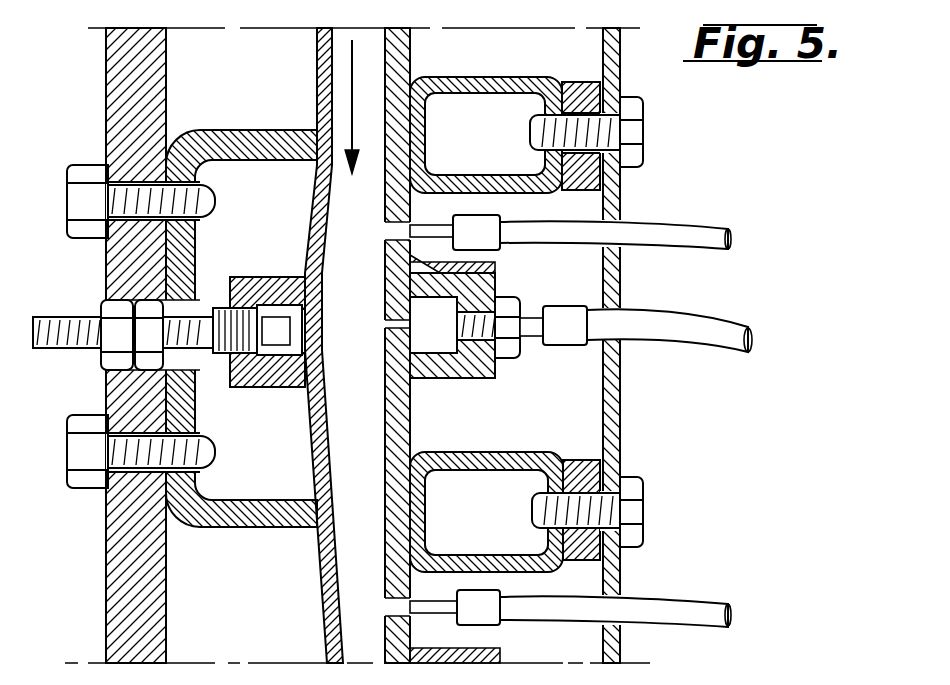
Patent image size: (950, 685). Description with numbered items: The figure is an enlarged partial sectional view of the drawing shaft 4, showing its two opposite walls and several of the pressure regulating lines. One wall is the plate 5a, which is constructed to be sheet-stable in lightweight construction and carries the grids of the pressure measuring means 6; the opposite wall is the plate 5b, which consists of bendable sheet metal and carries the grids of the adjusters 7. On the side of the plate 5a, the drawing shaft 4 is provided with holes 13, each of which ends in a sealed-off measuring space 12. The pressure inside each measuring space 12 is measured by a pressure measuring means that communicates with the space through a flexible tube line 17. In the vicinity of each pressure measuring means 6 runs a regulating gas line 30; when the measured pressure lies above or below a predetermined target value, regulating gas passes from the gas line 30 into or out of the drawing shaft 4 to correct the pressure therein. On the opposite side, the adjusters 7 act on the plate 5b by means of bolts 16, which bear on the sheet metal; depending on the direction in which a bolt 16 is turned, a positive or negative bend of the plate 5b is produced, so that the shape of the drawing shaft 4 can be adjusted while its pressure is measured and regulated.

The drawing shaft 4 is at (318, 58).
The plate 5a is at (408, 45).
The plate 5b is at (318, 104).
The pressure measuring means 6 is at (492, 268).
The adjuster 7 is at (164, 330).
The sealed-off measuring space 12 is at (432, 340).
The hole 13 is at (390, 324).
The bolt 16 is at (70, 348).
The flexible tube line 17 is at (673, 322).
The regulating gas line 30 is at (680, 228).